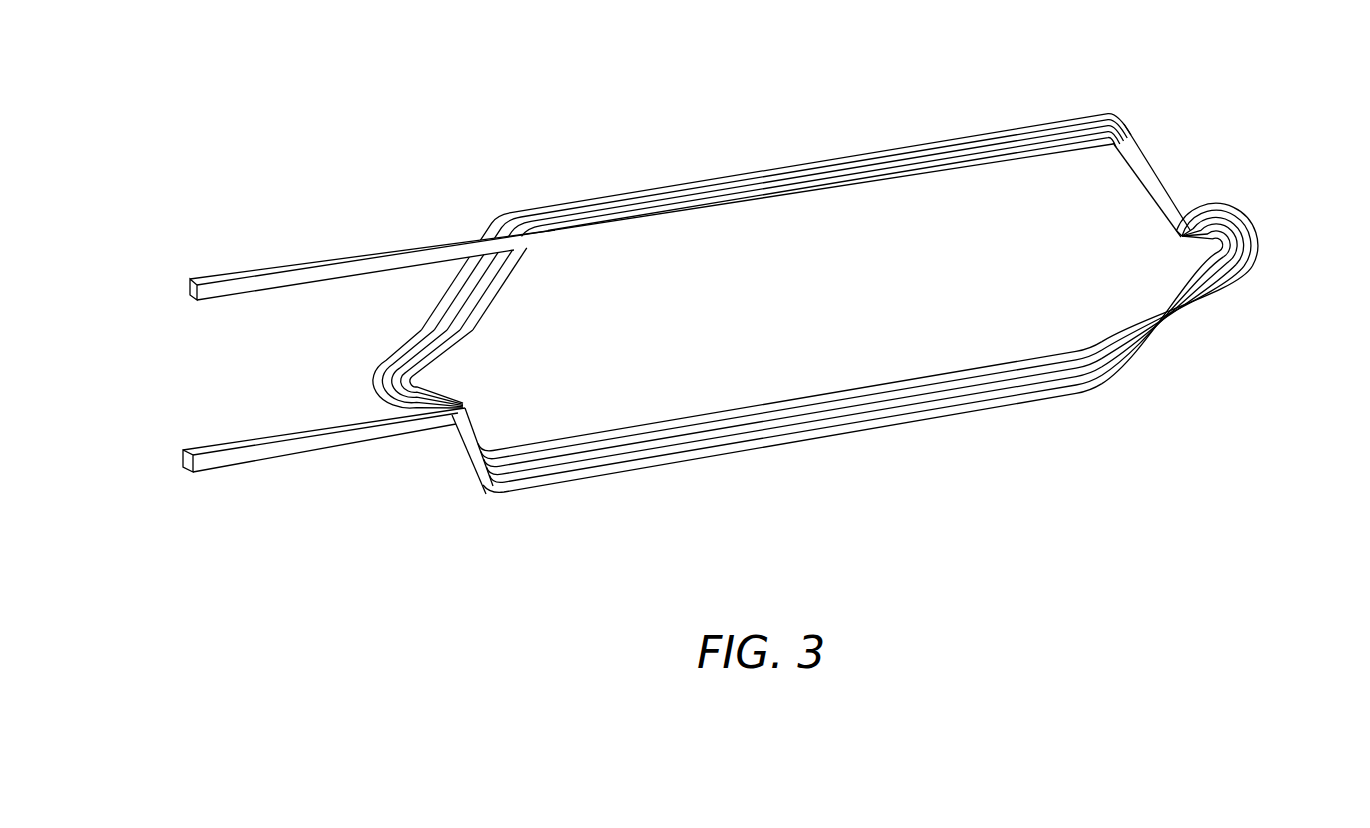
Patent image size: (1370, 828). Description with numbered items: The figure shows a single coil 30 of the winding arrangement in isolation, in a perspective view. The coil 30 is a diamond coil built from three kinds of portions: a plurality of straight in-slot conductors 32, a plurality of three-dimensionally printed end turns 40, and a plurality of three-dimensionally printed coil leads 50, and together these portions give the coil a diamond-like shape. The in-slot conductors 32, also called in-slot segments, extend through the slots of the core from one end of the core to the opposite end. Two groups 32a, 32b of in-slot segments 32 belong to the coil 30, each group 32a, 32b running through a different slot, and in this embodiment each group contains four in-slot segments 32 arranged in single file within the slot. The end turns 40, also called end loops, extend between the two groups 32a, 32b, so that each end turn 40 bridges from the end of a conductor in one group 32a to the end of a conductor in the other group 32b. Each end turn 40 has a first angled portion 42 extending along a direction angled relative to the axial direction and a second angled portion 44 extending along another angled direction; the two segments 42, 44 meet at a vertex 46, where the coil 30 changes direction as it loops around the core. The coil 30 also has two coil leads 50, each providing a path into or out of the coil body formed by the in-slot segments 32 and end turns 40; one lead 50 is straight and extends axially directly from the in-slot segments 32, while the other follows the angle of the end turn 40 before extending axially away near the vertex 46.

The coil 30 is at (620, 158).
The first group of in-slot segments 32a is at (898, 146).
The in-slot conductor 32 is at (812, 425).
The second group of in-slot segments 32b is at (963, 412).
The first angled portion 42 is at (1155, 180).
The second angled portion 44 is at (1178, 324).
The end turn 40 is at (1147, 251).
The vertex 46 is at (1250, 233).
The coil lead 50 is at (325, 280).